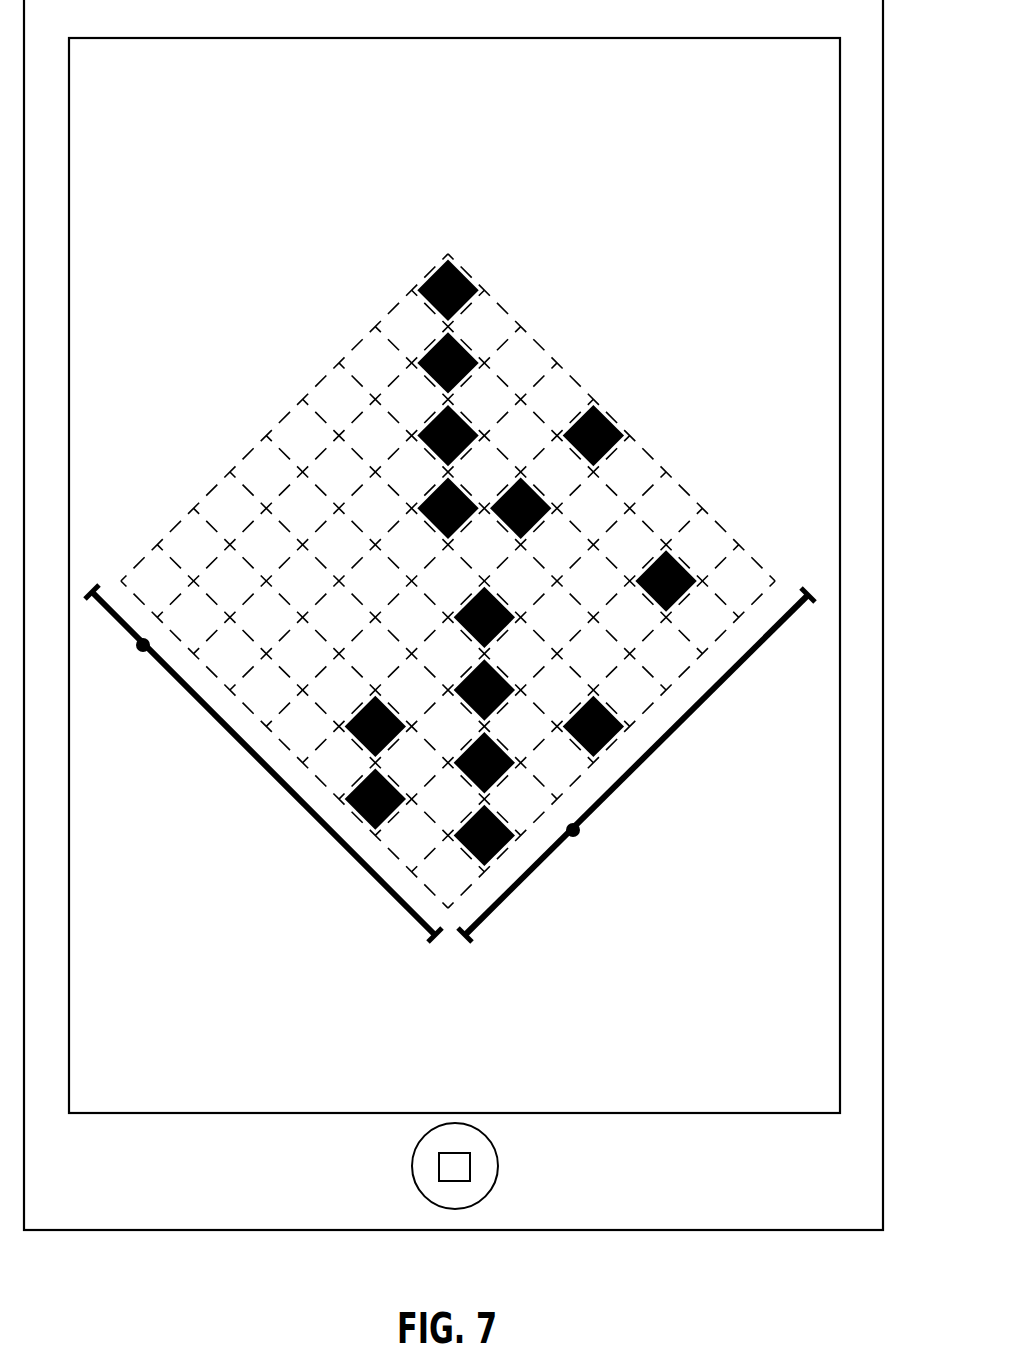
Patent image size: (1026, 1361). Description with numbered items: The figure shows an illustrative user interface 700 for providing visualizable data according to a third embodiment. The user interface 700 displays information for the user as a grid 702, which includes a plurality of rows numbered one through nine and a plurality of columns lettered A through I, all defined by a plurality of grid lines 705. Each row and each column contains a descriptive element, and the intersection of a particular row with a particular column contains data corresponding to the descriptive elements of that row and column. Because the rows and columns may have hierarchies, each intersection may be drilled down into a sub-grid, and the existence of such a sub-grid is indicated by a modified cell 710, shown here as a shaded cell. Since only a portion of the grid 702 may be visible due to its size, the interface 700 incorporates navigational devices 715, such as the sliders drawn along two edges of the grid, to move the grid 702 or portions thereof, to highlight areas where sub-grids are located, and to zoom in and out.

The user interface 700 is at (832, 917).
The grid 702 is at (629, 150).
The grid lines 705 is at (285, 517).
The modified cell 710 is at (480, 427).
The navigational devices 715 is at (255, 762).